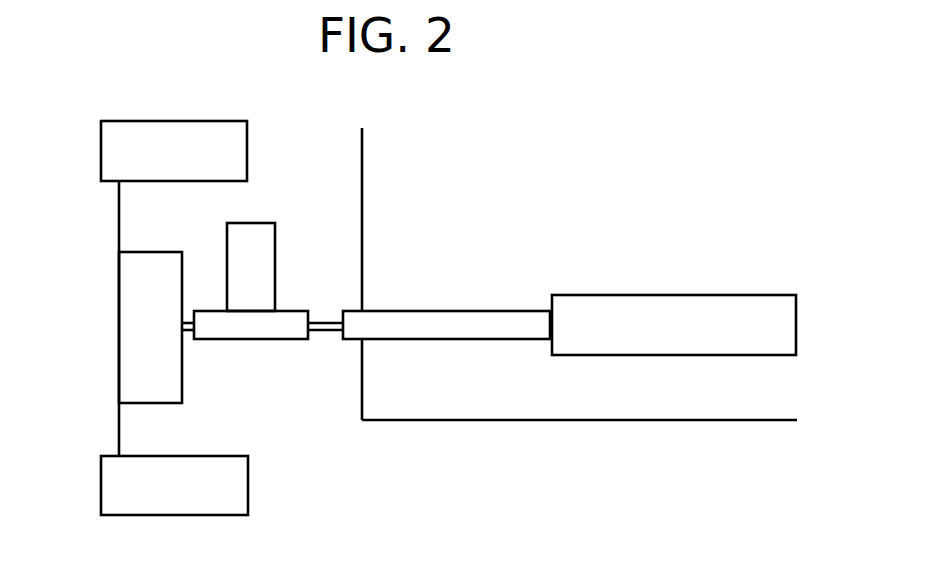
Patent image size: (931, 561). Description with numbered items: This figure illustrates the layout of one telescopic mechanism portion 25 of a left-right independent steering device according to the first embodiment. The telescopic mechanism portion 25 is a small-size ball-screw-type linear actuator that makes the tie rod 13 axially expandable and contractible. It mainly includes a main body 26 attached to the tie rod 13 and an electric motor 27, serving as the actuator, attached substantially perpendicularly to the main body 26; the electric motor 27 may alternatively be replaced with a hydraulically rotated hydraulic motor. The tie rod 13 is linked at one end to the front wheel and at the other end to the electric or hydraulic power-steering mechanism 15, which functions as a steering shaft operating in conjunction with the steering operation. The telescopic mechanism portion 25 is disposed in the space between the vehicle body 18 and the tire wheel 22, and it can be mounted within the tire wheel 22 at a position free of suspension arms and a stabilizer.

The tire wheel 22 is at (119, 307).
The telescopic mechanism portion 25 is at (264, 264).
The electric motor 27 is at (275, 245).
The main body 26 is at (250, 340).
The tie rod 13 is at (323, 340).
The power-steering mechanism 15 is at (673, 294).
The vehicle body 18 is at (510, 421).